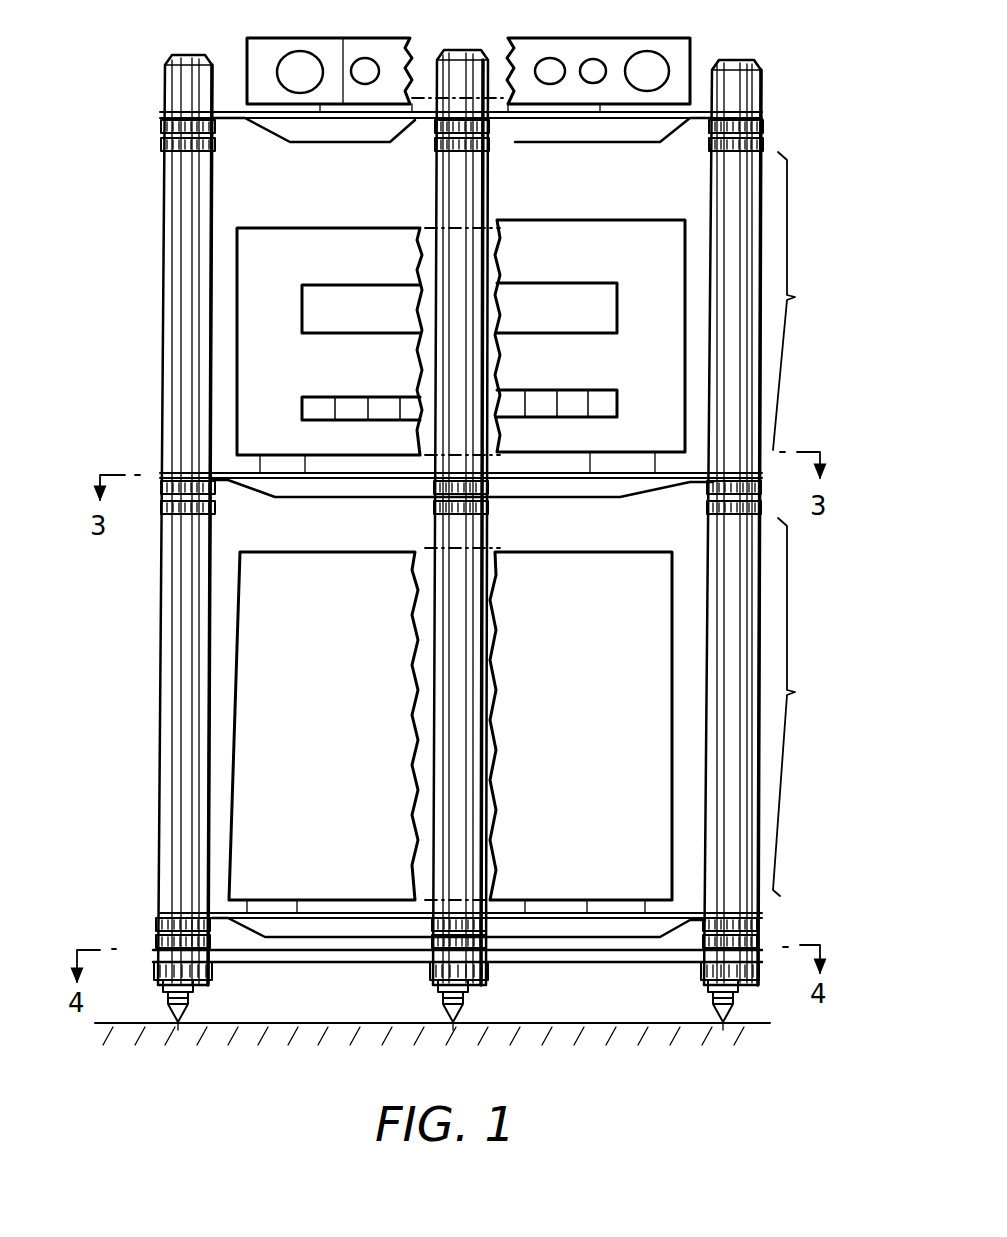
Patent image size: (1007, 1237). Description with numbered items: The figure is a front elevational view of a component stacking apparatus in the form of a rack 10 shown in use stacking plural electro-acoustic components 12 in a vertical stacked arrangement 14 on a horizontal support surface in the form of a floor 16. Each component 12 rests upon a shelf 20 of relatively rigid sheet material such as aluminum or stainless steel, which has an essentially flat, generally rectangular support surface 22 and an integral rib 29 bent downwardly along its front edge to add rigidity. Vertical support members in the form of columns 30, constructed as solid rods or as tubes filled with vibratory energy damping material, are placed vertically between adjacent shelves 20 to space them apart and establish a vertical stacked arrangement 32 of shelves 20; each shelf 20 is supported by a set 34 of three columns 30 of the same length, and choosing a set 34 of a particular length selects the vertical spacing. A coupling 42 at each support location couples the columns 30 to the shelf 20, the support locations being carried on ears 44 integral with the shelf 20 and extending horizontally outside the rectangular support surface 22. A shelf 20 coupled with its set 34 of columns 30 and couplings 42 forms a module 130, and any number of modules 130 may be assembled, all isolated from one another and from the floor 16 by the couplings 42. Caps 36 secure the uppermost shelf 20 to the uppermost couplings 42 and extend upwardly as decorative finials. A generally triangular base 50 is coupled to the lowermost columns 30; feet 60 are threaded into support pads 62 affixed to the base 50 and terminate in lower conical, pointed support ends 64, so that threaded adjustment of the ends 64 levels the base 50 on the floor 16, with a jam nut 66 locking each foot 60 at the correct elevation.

The rack 10 is at (150, 220).
The electro-acoustic component 12 is at (434, 457).
The vertical stacked arrangement 14 is at (230, 52).
The floor 16 is at (627, 1023).
The shelf 20 is at (422, 120).
The support surface 22 is at (350, 45).
The integral rib 29 is at (328, 140).
The column 30 is at (162, 345).
The vertical stacked arrangement of shelves 32 is at (750, 60).
The set of columns 34 is at (795, 297).
The cap 36 is at (166, 89).
The coupling 42 is at (218, 146).
The ear 44 is at (163, 124).
The base 50 is at (330, 964).
The foot 60 is at (190, 1008).
The support pad 62 is at (210, 972).
The support end 64 is at (178, 1028).
The jam nut 66 is at (163, 988).
The module 130 is at (810, 524).